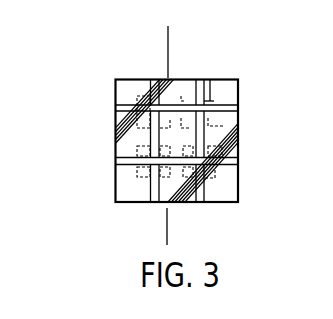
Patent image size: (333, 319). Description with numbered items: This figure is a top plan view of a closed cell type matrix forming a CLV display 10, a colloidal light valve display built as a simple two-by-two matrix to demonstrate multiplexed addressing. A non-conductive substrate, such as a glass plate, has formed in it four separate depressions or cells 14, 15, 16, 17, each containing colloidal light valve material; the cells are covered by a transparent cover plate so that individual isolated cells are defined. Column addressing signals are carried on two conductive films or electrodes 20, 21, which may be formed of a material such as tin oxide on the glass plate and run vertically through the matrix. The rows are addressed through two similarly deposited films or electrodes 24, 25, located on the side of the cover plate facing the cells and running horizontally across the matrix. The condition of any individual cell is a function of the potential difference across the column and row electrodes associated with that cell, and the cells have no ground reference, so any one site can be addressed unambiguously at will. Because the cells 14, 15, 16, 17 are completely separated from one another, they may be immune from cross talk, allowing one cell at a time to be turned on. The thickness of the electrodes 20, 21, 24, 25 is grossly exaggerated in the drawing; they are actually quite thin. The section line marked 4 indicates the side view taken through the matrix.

The CLV display 10 is at (249, 106).
The cell 14 is at (167, 98).
The cell 15 is at (213, 101).
The cell 16 is at (146, 172).
The cell 17 is at (210, 172).
The conductive film electrode 20 is at (147, 196).
The conductive film electrode 21 is at (203, 198).
The conductive film electrode 24 is at (116, 109).
The conductive film electrode 25 is at (120, 162).
The section line 4- 4 is at (156, 42).